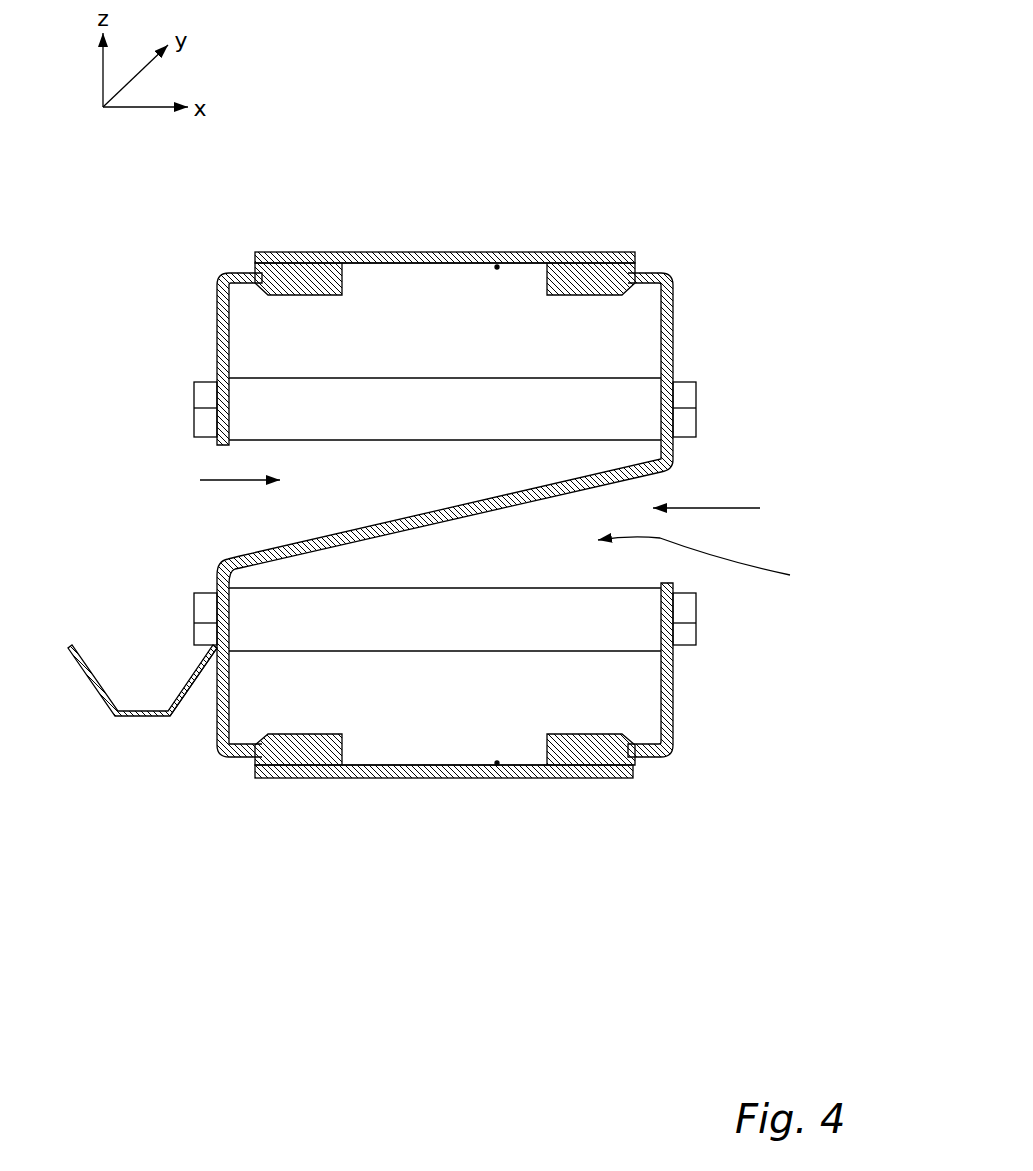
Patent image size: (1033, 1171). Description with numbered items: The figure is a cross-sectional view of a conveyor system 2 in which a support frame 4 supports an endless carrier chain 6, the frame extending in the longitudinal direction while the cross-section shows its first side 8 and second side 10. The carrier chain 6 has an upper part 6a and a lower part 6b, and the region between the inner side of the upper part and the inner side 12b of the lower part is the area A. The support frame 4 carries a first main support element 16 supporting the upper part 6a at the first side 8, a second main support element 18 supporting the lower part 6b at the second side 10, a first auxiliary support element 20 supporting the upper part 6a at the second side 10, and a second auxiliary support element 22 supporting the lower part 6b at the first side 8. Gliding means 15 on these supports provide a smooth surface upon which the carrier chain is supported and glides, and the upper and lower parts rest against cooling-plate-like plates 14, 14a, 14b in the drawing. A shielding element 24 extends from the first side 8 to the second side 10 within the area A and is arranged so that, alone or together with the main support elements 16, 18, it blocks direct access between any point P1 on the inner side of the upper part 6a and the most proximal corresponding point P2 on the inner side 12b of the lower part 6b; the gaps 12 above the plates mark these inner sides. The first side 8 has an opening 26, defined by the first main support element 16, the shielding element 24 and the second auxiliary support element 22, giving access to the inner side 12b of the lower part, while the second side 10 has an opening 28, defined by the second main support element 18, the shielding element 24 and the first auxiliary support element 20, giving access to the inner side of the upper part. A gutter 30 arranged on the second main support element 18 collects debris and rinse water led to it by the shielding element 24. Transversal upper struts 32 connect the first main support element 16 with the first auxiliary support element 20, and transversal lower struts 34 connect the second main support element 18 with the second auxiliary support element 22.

The conveyor system 2 is at (637, 170).
The support frame 4 is at (720, 438).
The endless carrier chain 6 is at (576, 513).
The upper part of the endless carrier chain 6a is at (544, 263).
The lower part of the endless carrier chain 6b is at (585, 779).
The first side of the support frame 8 is at (700, 337).
The second side of the support frame 10 is at (172, 347).
The inner side of the endless carrier chain 12 is at (412, 265).
The inner side of the lower part of the endless carrier chain 12b is at (412, 770).
The cooling plate 14 is at (458, 252).
The upper cooling plate 14a is at (460, 778).
The lower cooling plate 14b is at (444, 771).
The gliding means 15 is at (256, 264).
The first main support element 16 is at (668, 278).
The second main support element 18 is at (217, 730).
The first auxiliary support element 20 is at (222, 278).
The second auxiliary support element 22 is at (673, 745).
The shielding element 24 is at (417, 516).
The opening 26 is at (748, 505).
The opening 28 is at (183, 478).
The gutter 30 is at (105, 678).
The transversal upper strut 32 is at (314, 400).
The transversal lower strut 34 is at (218, 716).
The point on the inner side of the upper part P1 is at (496, 280).
The point on the inner side of the lower part P2 is at (496, 749).
The area A is at (698, 564).